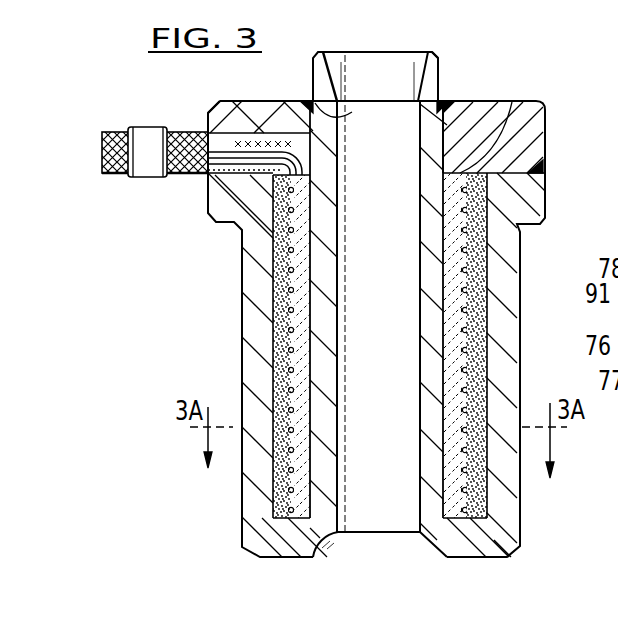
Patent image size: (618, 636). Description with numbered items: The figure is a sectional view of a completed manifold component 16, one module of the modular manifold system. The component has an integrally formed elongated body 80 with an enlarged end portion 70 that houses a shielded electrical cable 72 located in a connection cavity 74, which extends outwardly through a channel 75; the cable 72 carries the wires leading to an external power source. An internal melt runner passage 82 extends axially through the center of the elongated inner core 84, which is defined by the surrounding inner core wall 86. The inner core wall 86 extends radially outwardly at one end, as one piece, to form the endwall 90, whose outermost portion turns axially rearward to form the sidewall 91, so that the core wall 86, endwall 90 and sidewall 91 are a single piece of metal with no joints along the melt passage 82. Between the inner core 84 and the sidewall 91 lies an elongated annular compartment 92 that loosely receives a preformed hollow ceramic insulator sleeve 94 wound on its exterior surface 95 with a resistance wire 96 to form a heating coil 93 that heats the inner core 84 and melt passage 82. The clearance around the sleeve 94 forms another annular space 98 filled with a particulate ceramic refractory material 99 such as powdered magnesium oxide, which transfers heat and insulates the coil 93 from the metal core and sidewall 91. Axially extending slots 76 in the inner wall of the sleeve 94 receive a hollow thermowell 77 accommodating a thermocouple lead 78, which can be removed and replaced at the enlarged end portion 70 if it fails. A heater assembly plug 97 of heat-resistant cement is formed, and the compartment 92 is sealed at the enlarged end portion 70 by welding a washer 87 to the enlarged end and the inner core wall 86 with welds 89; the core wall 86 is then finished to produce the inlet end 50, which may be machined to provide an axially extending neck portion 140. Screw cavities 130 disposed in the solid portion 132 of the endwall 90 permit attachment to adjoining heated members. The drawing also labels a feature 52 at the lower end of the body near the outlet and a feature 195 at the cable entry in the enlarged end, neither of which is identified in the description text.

The manifold component 16 is at (530, 108).
The inlet end 50 is at (437, 52).
The bottom opening 52 is at (345, 555).
The enlarged end portion 70 is at (546, 192).
The shielded electrical cable 72 is at (101, 146).
The connection cavity 74 is at (277, 132).
The channel 75 is at (228, 176).
The axially extending slots 76 is at (275, 463).
The hollow thermowell 77 is at (270, 248).
The thermocouple lead 78 is at (313, 197).
The elongated body 80 is at (503, 353).
The melt runner passage 82 is at (397, 138).
The elongated inner core 84 is at (433, 345).
The inner core wall 86 is at (425, 260).
The washer 87 is at (527, 133).
The welds 89 is at (582, 160).
The endwall 90 is at (252, 545).
The sidewall 91 is at (252, 395).
The annular compartment 92 is at (475, 262).
The heating coil 93 is at (277, 347).
The ceramic insulator sleeve 94 is at (498, 106).
The exterior surface 95 is at (490, 233).
The resistance wire 96 is at (275, 312).
The heater assembly plug 97 is at (233, 142).
The annular space 98 is at (525, 152).
The particulate ceramic refractory material 99 is at (278, 490).
The screw cavities 130 is at (218, 100).
The solid portion 132 is at (290, 540).
The neck portion 140 is at (428, 78).
The conductor 195 is at (302, 145).